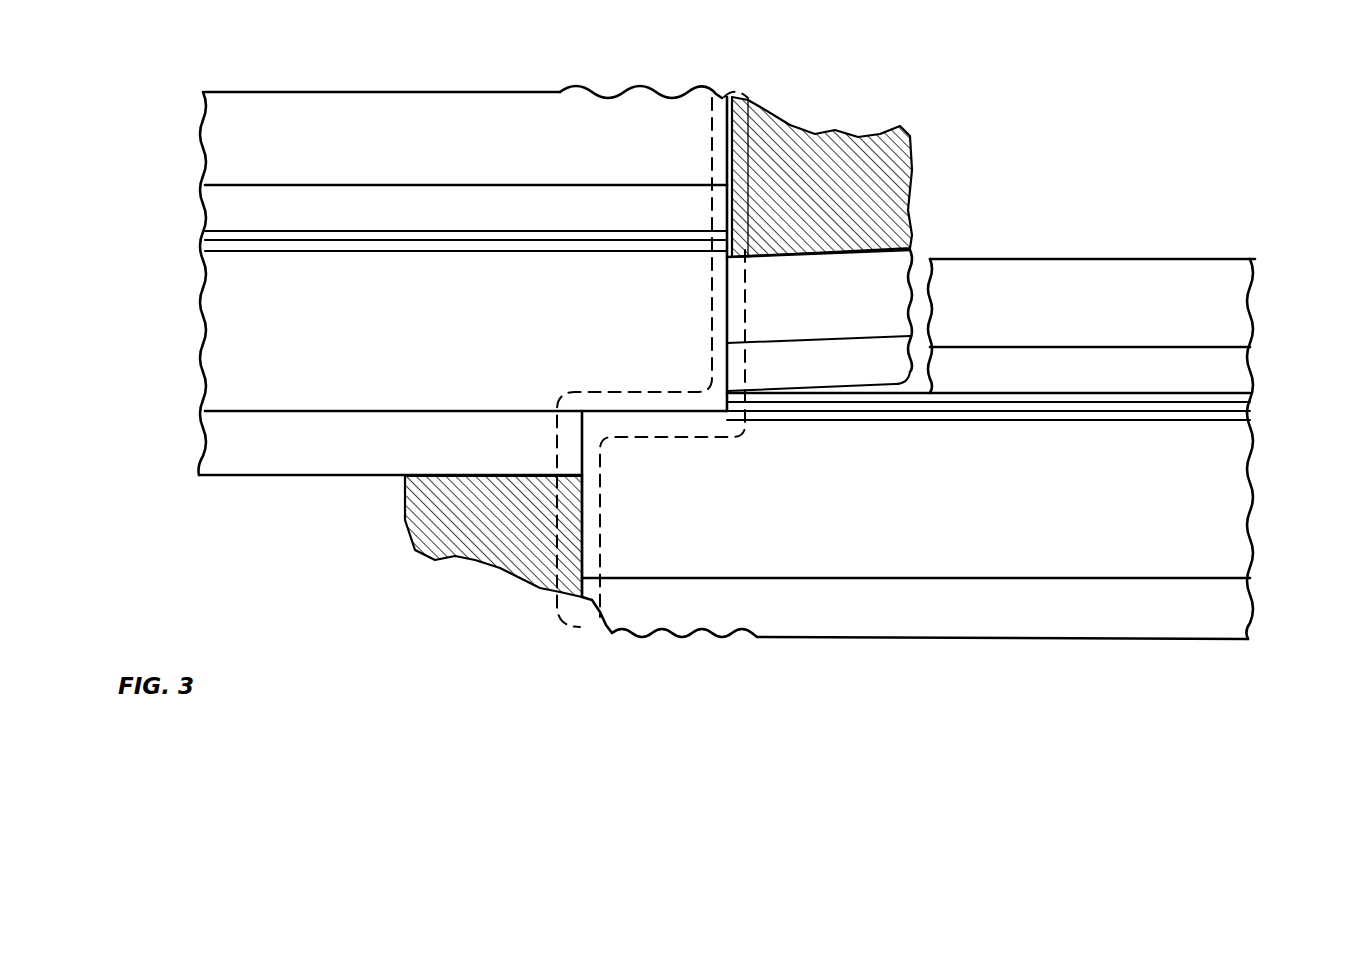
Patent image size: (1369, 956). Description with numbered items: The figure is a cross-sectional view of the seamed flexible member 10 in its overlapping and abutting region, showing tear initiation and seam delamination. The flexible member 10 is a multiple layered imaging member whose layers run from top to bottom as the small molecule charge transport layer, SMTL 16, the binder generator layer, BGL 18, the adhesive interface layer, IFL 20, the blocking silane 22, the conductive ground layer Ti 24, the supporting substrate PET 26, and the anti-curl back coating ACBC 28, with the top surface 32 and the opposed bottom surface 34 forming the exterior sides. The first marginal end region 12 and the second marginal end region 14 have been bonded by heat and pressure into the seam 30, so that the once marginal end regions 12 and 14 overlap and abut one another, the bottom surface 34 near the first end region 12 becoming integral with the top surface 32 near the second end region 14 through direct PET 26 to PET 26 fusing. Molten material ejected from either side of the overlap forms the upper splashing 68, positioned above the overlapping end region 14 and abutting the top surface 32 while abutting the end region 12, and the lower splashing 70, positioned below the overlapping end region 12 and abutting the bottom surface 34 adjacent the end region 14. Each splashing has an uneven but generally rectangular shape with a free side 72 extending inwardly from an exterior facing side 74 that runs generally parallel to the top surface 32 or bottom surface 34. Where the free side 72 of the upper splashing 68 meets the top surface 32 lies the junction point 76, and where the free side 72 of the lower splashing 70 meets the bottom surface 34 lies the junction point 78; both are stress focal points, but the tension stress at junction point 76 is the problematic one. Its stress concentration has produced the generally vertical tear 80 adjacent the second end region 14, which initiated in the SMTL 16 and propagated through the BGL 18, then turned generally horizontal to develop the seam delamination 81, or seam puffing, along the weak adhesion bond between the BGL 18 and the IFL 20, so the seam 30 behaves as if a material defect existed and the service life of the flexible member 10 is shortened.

The flexible member 10 is at (1142, 167).
The first marginal end region 12 is at (677, 56).
The second marginal end region 14 is at (656, 672).
The small molecule charge transport layer (SMTL) 16 is at (218, 130).
The binder generator layer (BGL) 18 is at (213, 195).
The interface layer (IFL) 20 is at (205, 232).
The silane layer 22 is at (205, 242).
The titanium layer (Ti) 24 is at (205, 252).
The polyethylene terephthalate layer (PET) 26 is at (222, 331).
The anti-curl back coating layer (ACBC) 28 is at (213, 425).
The seam 30 is at (573, 630).
The top surface 32 is at (429, 90).
The bottom surface 34 is at (247, 476).
The upper splashing 68 is at (891, 122).
The lower splashing 70 is at (434, 587).
The free side 72 is at (905, 136).
The exterior facing side 74 is at (823, 131).
The junction point 76 is at (917, 262).
The junction point 78 is at (398, 477).
The tear 80 is at (921, 272).
The seam delamination 81 is at (885, 390).